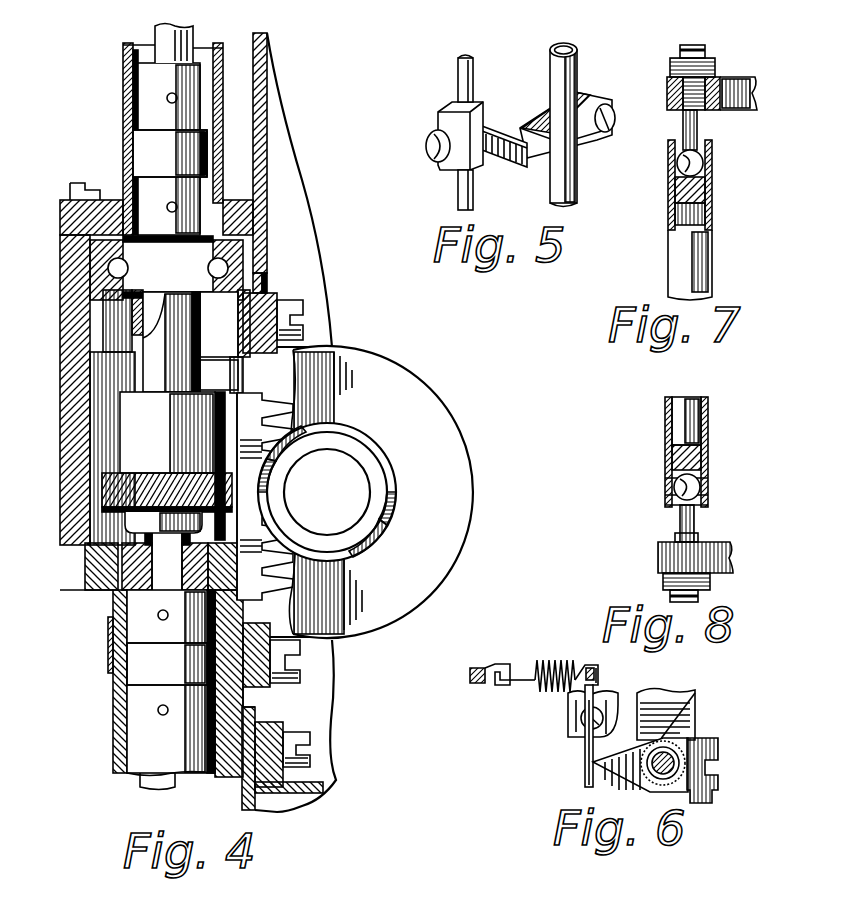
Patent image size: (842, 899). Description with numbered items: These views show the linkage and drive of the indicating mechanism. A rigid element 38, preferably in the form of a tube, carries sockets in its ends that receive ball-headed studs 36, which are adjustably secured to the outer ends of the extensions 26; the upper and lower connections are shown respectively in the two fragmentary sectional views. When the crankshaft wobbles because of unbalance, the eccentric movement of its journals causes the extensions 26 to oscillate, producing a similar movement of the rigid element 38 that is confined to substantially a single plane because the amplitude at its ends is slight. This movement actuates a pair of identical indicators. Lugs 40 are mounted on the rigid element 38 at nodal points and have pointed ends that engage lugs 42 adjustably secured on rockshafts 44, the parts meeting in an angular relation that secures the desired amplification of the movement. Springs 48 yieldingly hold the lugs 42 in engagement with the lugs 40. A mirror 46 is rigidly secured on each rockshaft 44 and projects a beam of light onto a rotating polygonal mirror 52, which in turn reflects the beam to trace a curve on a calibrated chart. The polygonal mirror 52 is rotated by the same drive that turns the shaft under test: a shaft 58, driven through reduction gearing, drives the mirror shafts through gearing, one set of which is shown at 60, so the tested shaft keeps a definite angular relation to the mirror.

In FIG. 7, the extension 26 is at (720, 90).
In FIG. 8, the extension 26 is at (720, 552).
In FIG. 6, the extension 26 is at (665, 708).
In FIG. 7, the ball-headed stud 36 is at (705, 158).
In FIG. 8, the ball-headed stud 36 is at (700, 495).
In FIG. 6, the ball-headed stud 36 is at (648, 780).
In FIG. 5, the rigid element 38 is at (565, 80).
In FIG. 7, the rigid element 38 is at (712, 245).
In FIG. 8, the rigid element 38 is at (708, 435).
In FIG. 6, the rigid element 38 is at (712, 762).
In FIG. 5, the lug 40 is at (545, 150).
In FIG. 6, the lug 40 is at (660, 740).
In FIG. 5, the lug 42 is at (497, 130).
In FIG. 6, the lug 42 is at (585, 755).
In FIG. 5, the rockshaft 44 is at (462, 85).
In FIG. 6, the rockshaft 44 is at (596, 712).
In FIG. 6, the mirror 46 is at (568, 730).
In FIG. 6, the spring 48 is at (555, 670).
In FIG. 4, the rotating polygonal mirror 52 is at (378, 463).
In FIG. 4, the shaft 58 is at (150, 107).
In FIG. 4, the gearing 60 is at (100, 497).